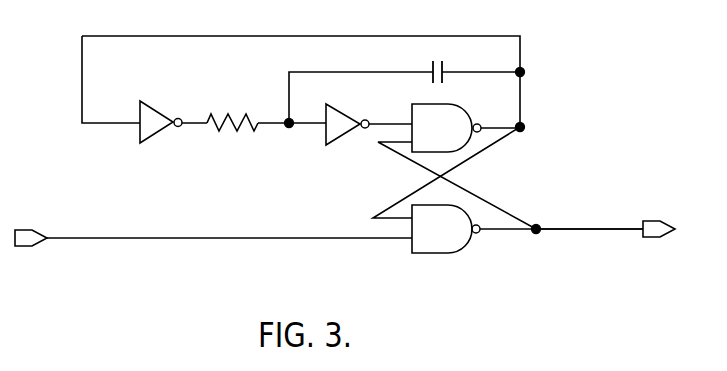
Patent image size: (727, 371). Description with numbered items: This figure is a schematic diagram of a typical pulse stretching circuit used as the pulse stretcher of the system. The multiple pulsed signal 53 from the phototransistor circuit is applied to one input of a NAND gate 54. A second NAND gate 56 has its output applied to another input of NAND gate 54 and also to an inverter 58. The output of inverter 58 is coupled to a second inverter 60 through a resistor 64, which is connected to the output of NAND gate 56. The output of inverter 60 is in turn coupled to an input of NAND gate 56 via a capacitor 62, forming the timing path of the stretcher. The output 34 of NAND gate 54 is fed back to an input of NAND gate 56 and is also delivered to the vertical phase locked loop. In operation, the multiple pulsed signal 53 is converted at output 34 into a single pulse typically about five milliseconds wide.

The output 34 is at (580, 229).
The signal 53 is at (237, 238).
The NAND gate 54 is at (461, 249).
The second NAND gate 56 is at (462, 108).
The inverter 58 is at (151, 107).
The second inverter 60 is at (337, 110).
The capacitor 62 is at (442, 83).
The resistor 64 is at (230, 116).